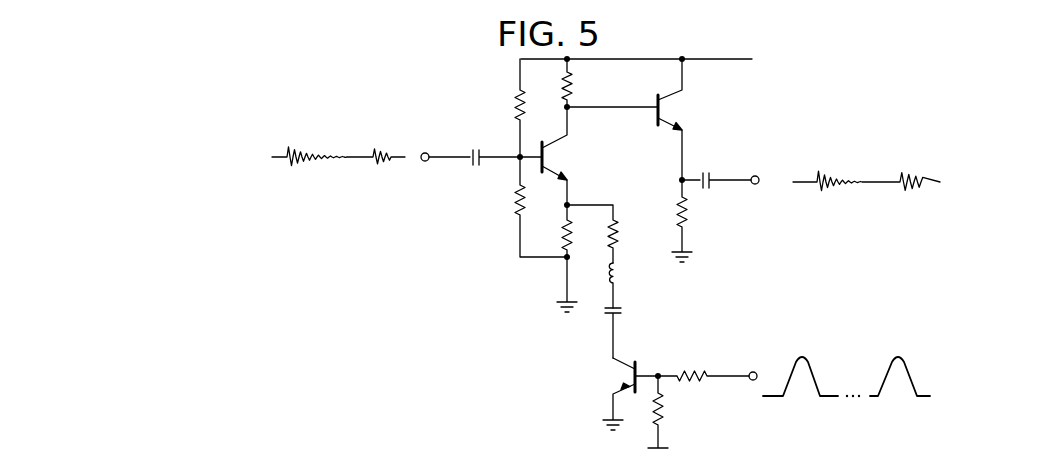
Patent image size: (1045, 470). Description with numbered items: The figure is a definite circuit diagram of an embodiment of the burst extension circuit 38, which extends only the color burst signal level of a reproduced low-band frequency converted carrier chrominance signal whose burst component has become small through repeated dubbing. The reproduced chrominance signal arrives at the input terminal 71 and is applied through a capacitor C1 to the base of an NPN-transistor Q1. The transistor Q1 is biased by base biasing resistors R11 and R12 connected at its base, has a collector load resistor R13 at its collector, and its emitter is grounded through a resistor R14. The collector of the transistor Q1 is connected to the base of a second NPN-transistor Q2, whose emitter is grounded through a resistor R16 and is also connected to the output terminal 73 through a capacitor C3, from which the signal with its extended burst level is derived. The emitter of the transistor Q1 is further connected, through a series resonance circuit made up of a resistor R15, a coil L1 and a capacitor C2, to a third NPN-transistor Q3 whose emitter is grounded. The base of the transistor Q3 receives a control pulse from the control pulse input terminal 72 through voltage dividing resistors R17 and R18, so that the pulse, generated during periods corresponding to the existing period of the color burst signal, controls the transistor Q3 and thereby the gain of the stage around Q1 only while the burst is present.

The burst extension circuit 38 is at (718, 41).
The input terminal 71 is at (425, 161).
The control pulse input terminal 72 is at (752, 372).
The output terminal 73 is at (758, 183).
The base biasing resistor R11 is at (504, 108).
The base biasing resistor R12 is at (524, 207).
The collector load resistor R13 is at (581, 83).
The resistor R14 is at (552, 258).
The resistor R15 is at (608, 234).
The resistor R16 is at (696, 221).
The voltage dividing resistor R17 is at (703, 366).
The voltage dividing resistor R18 is at (673, 412).
The capacitor C1 is at (474, 145).
The capacitor C2 is at (627, 330).
The capacitor C3 is at (716, 169).
The coil L1 is at (624, 285).
The NPN-transistor Q1 is at (555, 156).
The NPN-transistor Q2 is at (636, 119).
The NPN-transistor Q3 is at (621, 394).